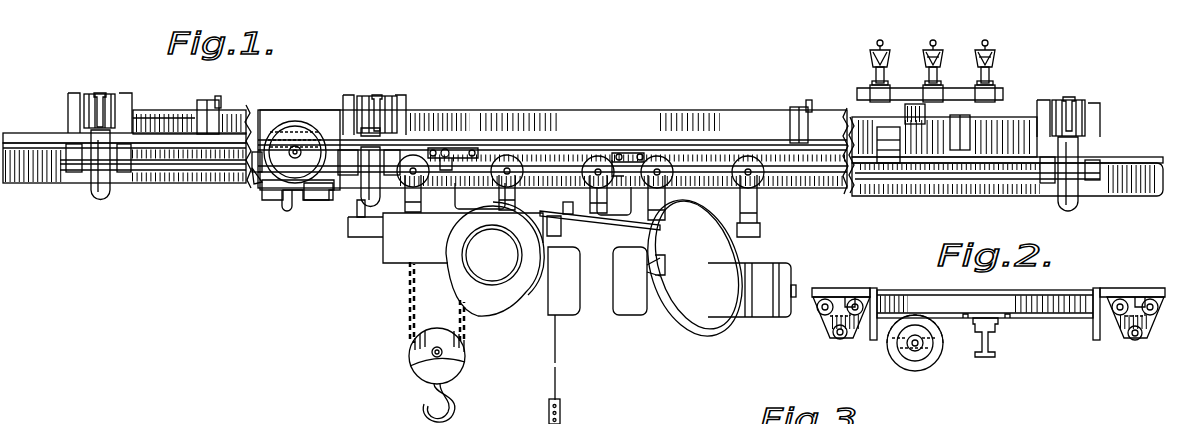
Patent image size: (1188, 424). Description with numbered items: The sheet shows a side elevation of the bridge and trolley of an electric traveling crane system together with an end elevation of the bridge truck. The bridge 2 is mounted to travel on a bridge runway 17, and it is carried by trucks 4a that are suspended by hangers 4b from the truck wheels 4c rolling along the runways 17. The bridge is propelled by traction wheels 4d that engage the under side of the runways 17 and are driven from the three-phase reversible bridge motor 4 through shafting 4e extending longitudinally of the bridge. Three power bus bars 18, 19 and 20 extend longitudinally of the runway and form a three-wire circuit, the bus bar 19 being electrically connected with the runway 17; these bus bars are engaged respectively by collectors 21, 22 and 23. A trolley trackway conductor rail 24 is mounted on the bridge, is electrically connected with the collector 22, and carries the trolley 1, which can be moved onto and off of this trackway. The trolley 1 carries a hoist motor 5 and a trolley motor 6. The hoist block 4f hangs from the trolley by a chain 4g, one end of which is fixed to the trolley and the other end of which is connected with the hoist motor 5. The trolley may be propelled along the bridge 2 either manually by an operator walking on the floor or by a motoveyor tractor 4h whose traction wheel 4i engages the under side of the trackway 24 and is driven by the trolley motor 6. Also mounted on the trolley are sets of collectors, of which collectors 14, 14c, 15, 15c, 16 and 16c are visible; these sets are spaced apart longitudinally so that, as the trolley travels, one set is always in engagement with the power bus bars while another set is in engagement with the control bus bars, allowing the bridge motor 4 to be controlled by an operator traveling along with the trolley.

In FIG. 1, the trolley 1 is at (376, 250).
In FIG. 1, the bridge 2 is at (201, 187).
In FIG. 1, the bridge motor 4 is at (293, 128).
In FIG. 1, the trucks 4a is at (65, 109).
In FIG. 2, the trucks 4a is at (1068, 285).
In FIG. 2, the hangers 4b is at (838, 338).
In FIG. 1, the truck wheels 4c is at (90, 96).
In FIG. 2, the truck wheels 4c is at (862, 295).
In FIG. 1, the traction wheels 4d is at (98, 198).
In FIG. 2, the traction wheels 4d is at (932, 363).
In FIG. 1, the shafting 4e is at (166, 170).
In FIG. 1, the hoist block 4f is at (420, 366).
In FIG. 1, the chain 4g is at (467, 331).
In FIG. 1, the motoveyor tractor 4h is at (772, 233).
In FIG. 1, the traction wheel 4i is at (757, 203).
In FIG. 1, the hoist motor 5 is at (497, 280).
In FIG. 1, the trolley motor 6 is at (697, 329).
In FIG. 1, the collector 14 is at (268, 190).
In FIG. 1, the collector 14c is at (258, 180).
In FIG. 1, the collector 15 is at (477, 150).
In FIG. 1, the collector 15c is at (443, 150).
In FIG. 1, the collector 16 is at (641, 153).
In FIG. 1, the collector 16c is at (618, 153).
In FIG. 1, the bridge runway 17 is at (101, 95).
In FIG. 2, the bridge runway 17 is at (862, 298).
In FIG. 1, the power bus bar 18 is at (872, 46).
In FIG. 1, the power bus bar 19 is at (938, 38).
In FIG. 1, the power bus bar 20 is at (991, 38).
In FIG. 1, the collector 21 is at (868, 55).
In FIG. 1, the collector 22 is at (924, 52).
In FIG. 1, the collector 23 is at (975, 60).
In FIG. 1, the trolley trackway conductor rail 24 is at (971, 190).
In FIG. 2, the trolley trackway conductor rail 24 is at (998, 348).